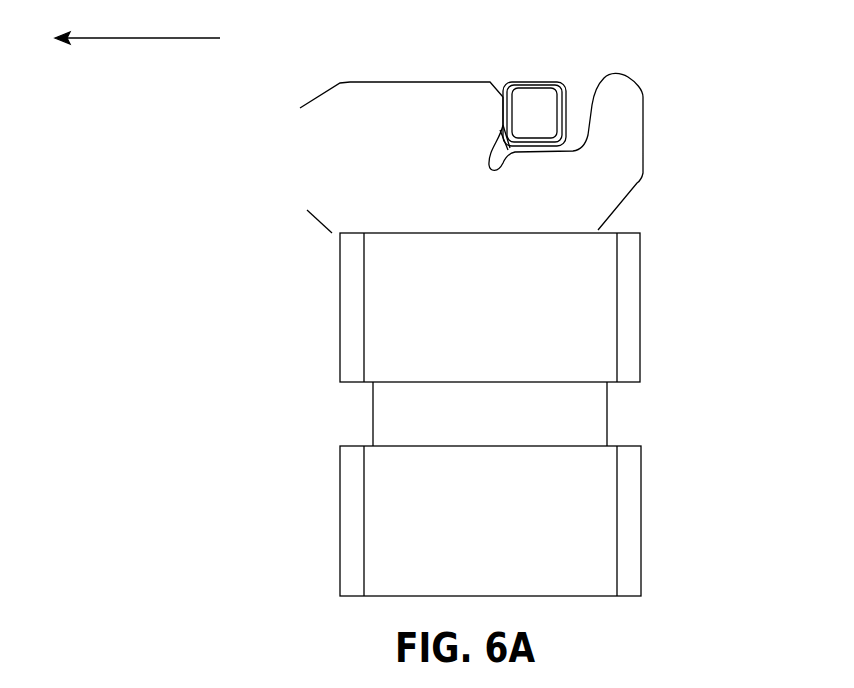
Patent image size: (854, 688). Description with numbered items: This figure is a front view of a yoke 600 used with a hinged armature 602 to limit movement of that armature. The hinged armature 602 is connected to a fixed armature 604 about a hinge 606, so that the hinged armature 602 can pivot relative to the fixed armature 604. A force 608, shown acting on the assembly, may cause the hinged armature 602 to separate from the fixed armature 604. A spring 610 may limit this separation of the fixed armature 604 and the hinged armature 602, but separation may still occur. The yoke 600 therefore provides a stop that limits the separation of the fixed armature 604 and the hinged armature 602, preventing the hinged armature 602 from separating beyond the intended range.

The yoke 600 is at (524, 301).
The hinged armature 602 is at (410, 95).
The fixed armature 604 is at (519, 95).
The hinge 606 is at (535, 82).
The force 608 is at (141, 40).
The spring 610 is at (597, 298).